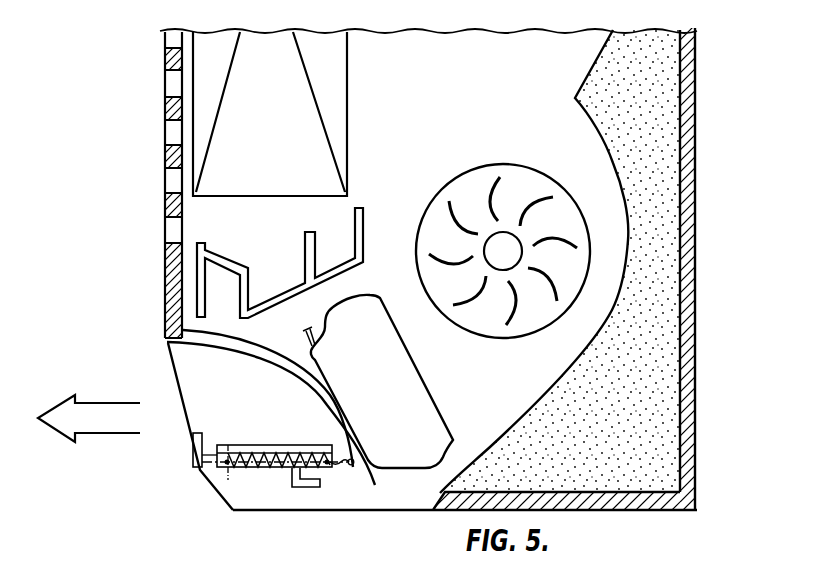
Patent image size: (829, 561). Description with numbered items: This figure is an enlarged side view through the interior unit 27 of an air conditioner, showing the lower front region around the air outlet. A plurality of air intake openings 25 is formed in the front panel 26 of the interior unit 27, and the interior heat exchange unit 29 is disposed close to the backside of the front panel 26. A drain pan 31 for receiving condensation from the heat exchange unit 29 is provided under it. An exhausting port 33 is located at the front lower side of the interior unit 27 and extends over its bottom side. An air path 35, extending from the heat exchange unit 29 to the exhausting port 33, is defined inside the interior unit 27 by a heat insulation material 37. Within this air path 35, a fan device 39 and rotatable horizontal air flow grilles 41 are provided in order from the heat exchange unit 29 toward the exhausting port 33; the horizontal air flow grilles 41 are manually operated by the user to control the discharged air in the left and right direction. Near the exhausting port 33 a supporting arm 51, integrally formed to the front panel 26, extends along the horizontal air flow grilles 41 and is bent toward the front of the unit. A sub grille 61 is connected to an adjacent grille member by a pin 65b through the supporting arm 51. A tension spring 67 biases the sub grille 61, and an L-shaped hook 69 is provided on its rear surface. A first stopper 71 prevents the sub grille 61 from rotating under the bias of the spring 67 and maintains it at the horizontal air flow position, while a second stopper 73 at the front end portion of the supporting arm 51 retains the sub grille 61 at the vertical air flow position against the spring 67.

The air intake openings 25 is at (165, 123).
The front panel 26 is at (157, 252).
The interior unit 27 is at (695, 80).
The interior heat exchange unit 29 is at (348, 152).
The drain pan 31 is at (196, 291).
The exhausting port 33 is at (197, 475).
The air path 35 is at (478, 71).
The heat insulation material 37 is at (602, 49).
The fan device 39 is at (582, 213).
The horizontal air flow grilles 41 is at (437, 407).
The supporting arm 51 is at (355, 466).
The sub grille 61 is at (266, 445).
The pin 65b is at (226, 465).
The tension spring 67 is at (273, 468).
The L-shaped hook 69 is at (306, 487).
The first stopper 71 is at (330, 470).
The second stopper 73 is at (200, 433).